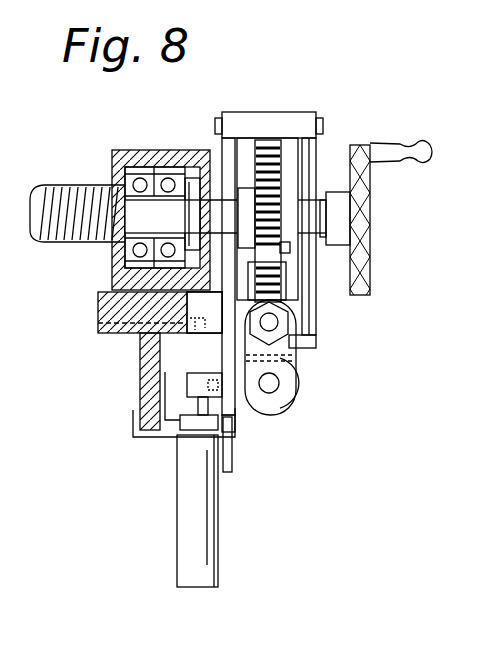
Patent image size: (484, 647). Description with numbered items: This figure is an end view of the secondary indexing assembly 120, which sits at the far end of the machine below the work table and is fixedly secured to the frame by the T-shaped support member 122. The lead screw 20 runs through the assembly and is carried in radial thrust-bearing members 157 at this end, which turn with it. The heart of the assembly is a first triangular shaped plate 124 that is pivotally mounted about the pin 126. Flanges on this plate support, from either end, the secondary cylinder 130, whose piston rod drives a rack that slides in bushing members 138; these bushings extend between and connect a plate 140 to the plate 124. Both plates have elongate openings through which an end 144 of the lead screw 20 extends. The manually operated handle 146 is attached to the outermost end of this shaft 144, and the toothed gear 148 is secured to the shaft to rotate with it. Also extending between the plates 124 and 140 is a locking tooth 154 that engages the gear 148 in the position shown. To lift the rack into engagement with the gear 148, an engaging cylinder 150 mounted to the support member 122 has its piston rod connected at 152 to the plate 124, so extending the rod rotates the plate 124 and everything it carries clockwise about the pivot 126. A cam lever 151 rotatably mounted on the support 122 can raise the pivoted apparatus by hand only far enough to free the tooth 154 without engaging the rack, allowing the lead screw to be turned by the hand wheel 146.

The lead screw 20 is at (42, 185).
The secondary indexing assembly 120 is at (332, 112).
The T-shaped support member 122 is at (132, 330).
The first triangular shaped plate 124 is at (220, 145).
The pin 126 is at (98, 323).
The secondary cylinder 130 is at (296, 390).
The bushing members 138 is at (293, 335).
The plate 140 is at (310, 292).
The end of the lead screw 144 is at (287, 207).
The manually operated handle 146 is at (365, 200).
The toothed gear 148 is at (272, 150).
The engaging cylinder 150 is at (202, 513).
The cam lever 151 is at (232, 462).
The piston rod connection 152 is at (190, 385).
The locking tooth 154 is at (248, 138).
The radial thrust-bearing members 157 is at (110, 150).